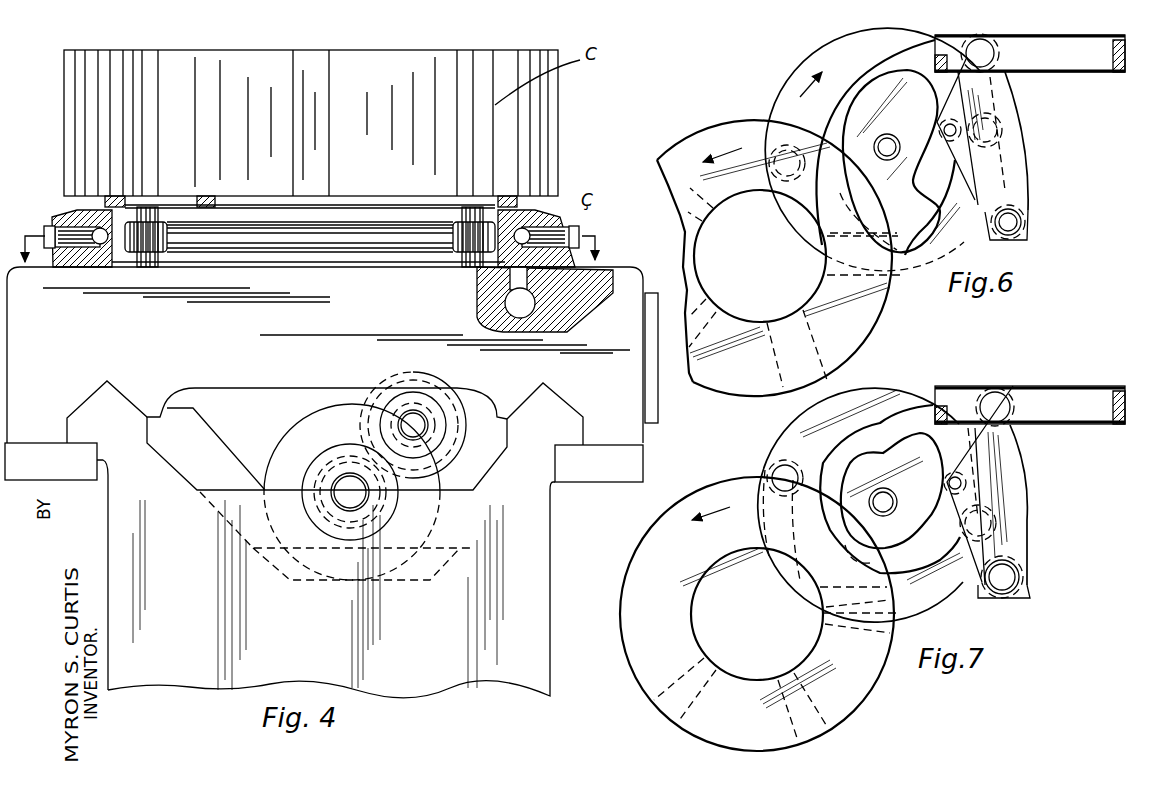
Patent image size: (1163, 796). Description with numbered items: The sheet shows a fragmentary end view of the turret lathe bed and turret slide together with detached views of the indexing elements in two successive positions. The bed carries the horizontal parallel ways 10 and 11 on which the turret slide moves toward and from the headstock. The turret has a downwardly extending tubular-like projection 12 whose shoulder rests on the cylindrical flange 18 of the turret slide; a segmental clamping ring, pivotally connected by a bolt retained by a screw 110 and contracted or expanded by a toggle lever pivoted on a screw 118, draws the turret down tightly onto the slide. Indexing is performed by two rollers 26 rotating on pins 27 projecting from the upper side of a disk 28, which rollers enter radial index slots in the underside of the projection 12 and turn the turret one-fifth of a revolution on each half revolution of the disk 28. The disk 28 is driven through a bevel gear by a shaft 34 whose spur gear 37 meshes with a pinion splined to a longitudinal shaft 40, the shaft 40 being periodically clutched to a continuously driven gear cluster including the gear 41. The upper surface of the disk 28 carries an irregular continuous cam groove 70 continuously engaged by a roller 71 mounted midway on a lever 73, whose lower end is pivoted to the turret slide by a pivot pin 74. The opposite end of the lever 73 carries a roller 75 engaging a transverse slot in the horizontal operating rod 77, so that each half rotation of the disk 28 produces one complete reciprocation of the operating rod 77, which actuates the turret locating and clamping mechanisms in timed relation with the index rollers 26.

In FIG. 4, the horizontal parallel way 10 is at (112, 396).
In FIG. 4, the horizontal parallel way 11 is at (557, 398).
In FIG. 6, the tubular-like projection 12 is at (867, 320).
In FIG. 7, the tubular-like projection 12 is at (855, 685).
In FIG. 4, the cylindrical flange 18 is at (312, 244).
In FIG. 6, the index rollers 26 is at (1000, 118).
In FIG. 7, the index rollers 26 is at (995, 521).
In FIG. 6, the pins 27 is at (1000, 135).
In FIG. 7, the pins 27 is at (1005, 540).
In FIG. 6, the disk 28 is at (823, 57).
In FIG. 7, the disk 28 is at (935, 590).
In FIG. 4, the shaft 34 is at (417, 420).
In FIG. 4, the spur gear 37 is at (423, 467).
In FIG. 4, the longitudinally extending shaft 40 is at (353, 487).
In FIG. 4, the gear 41 is at (300, 429).
In FIG. 6, the cam groove 70 is at (878, 62).
In FIG. 7, the cam groove 70 is at (890, 395).
In FIG. 6, the roller 71 is at (943, 125).
In FIG. 7, the roller 71 is at (945, 483).
In FIG. 6, the lever 73 is at (1012, 170).
In FIG. 7, the lever 73 is at (1015, 503).
In FIG. 6, the pivot pin 74 is at (1020, 219).
In FIG. 7, the pivot pin 74 is at (1015, 578).
In FIG. 6, the roller 75 is at (995, 40).
In FIG. 7, the roller 75 is at (1012, 397).
In FIG. 6, the operating rod 77 is at (1094, 45).
In FIG. 7, the operating rod 77 is at (1094, 405).
In FIG. 4, the screw 110 is at (62, 222).
In FIG. 4, the screw 118 is at (562, 228).